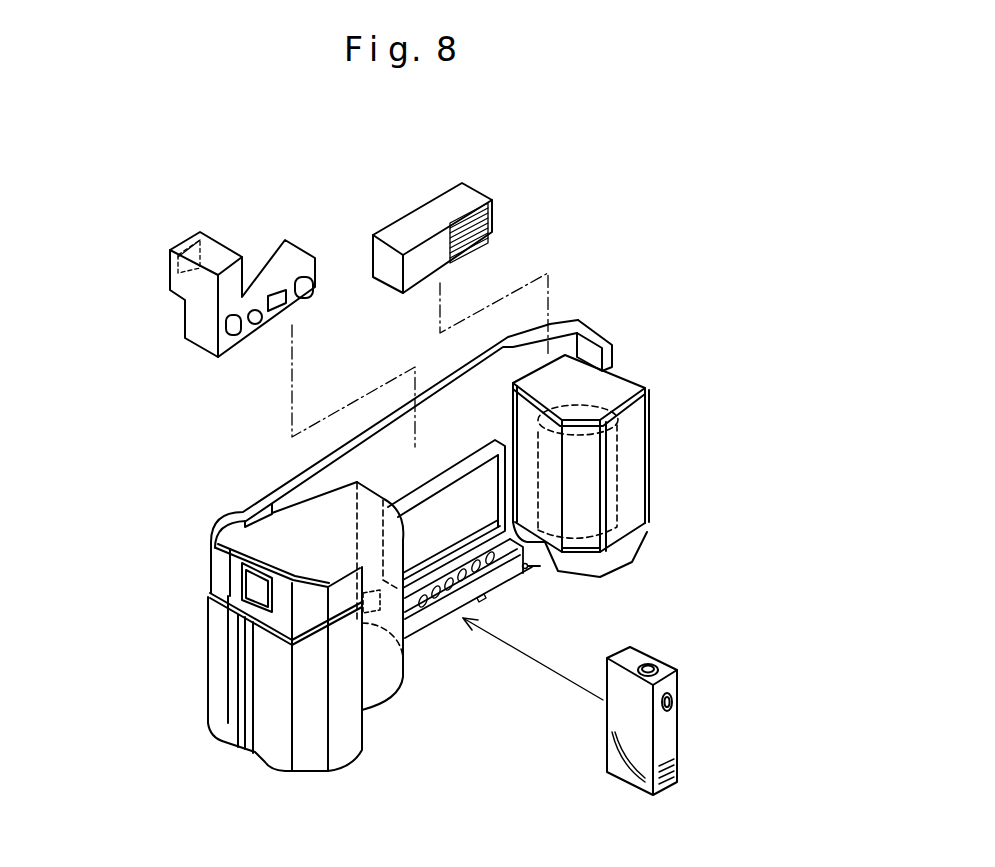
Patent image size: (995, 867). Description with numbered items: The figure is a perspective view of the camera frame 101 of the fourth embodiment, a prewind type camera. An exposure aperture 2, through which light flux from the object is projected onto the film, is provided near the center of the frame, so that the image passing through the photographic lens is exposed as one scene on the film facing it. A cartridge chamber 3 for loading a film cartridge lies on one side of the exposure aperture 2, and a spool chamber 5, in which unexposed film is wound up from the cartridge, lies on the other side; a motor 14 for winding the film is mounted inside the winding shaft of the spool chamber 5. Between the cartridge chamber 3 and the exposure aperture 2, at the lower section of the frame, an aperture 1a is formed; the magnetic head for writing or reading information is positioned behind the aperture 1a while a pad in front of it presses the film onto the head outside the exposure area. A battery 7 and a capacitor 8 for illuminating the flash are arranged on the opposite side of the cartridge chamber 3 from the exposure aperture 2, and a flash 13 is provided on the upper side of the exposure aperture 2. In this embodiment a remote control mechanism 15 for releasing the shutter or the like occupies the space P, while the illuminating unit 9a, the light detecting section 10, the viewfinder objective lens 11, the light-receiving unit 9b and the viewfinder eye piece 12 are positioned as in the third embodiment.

The camera frame 101 is at (603, 326).
The aperture 1a is at (372, 604).
The exposure aperture 2 is at (514, 570).
The cartridge chamber 3 is at (393, 687).
The spool chamber 5 is at (642, 466).
The motor 14 is at (623, 462).
The battery 7 is at (300, 753).
The capacitor 8 is at (223, 727).
The illuminating unit 9a is at (228, 333).
The light-receiving unit 9b is at (317, 290).
The light detecting section 10 is at (250, 323).
The viewfinder objective lens 11 is at (280, 318).
The viewfinder eye piece 12 is at (190, 234).
The flash 13 is at (430, 208).
The remote control mechanism 15 is at (668, 730).